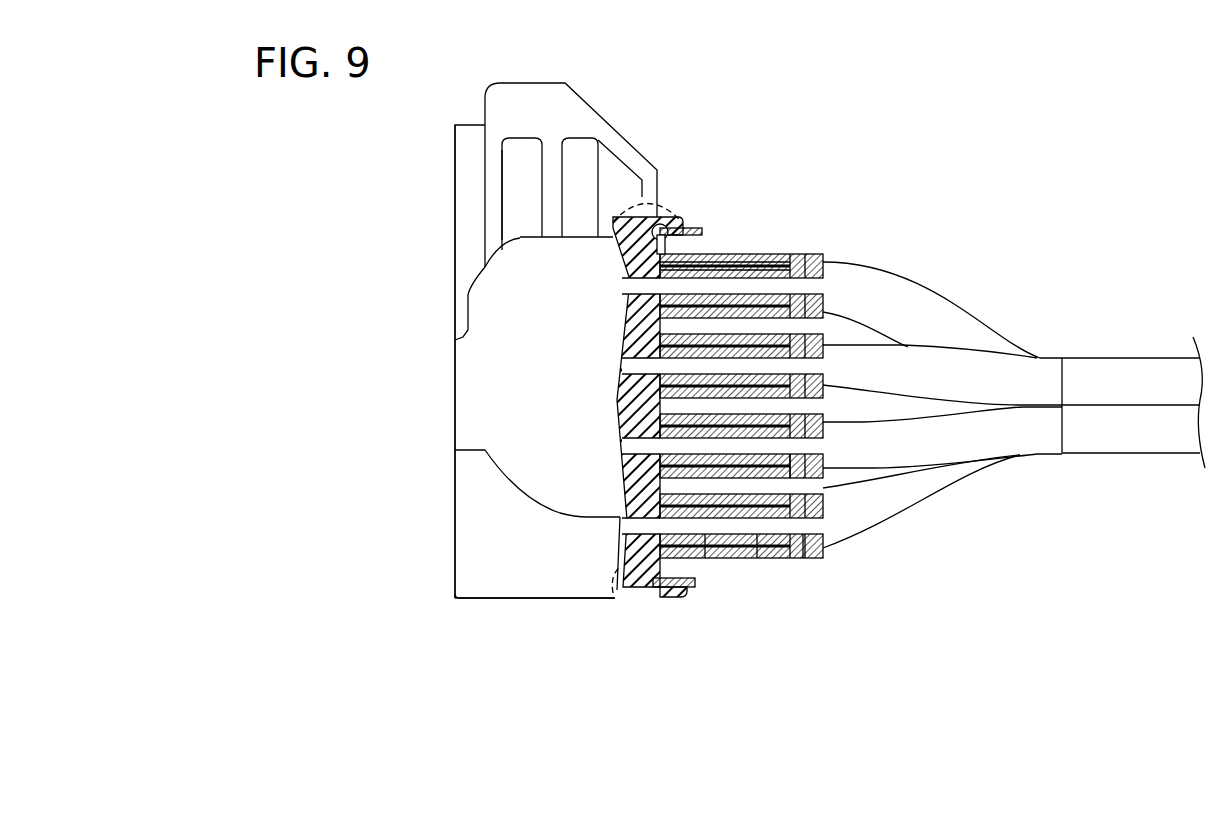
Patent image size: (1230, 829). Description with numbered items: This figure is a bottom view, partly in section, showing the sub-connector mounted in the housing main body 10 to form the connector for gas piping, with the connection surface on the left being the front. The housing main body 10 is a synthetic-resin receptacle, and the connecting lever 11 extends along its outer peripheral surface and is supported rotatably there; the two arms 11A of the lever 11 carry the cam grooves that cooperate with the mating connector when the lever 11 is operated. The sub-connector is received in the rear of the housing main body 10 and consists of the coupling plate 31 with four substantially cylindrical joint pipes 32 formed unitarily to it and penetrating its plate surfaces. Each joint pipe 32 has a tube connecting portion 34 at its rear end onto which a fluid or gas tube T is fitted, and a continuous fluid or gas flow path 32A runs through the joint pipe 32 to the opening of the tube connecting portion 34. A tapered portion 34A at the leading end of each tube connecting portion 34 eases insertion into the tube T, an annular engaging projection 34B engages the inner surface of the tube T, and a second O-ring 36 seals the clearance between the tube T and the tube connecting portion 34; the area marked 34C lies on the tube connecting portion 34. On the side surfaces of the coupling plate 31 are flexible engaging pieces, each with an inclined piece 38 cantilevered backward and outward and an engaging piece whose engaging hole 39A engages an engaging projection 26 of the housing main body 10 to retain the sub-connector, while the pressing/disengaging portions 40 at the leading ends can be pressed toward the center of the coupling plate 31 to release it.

The housing main body 10 is at (524, 619).
The connecting lever 11 is at (610, 122).
The arms 11A is at (512, 196).
The engaging projections 26 is at (673, 246).
The coupling plate 31 is at (630, 487).
The joint pipes 32 is at (725, 266).
The fluid or gas flow path 32A is at (803, 465).
The tube connecting portion 34 is at (760, 260).
The tapered portion 34A is at (803, 302).
The annular engaging projection 34B is at (707, 562).
The barrel base 34C is at (803, 547).
The second O-ring 36 is at (757, 562).
The inclined piece 38 is at (617, 573).
The engaging hole 39A is at (662, 226).
The pressing/disengaging portions 40 is at (702, 232).
The fluid or gas tube T is at (905, 313).